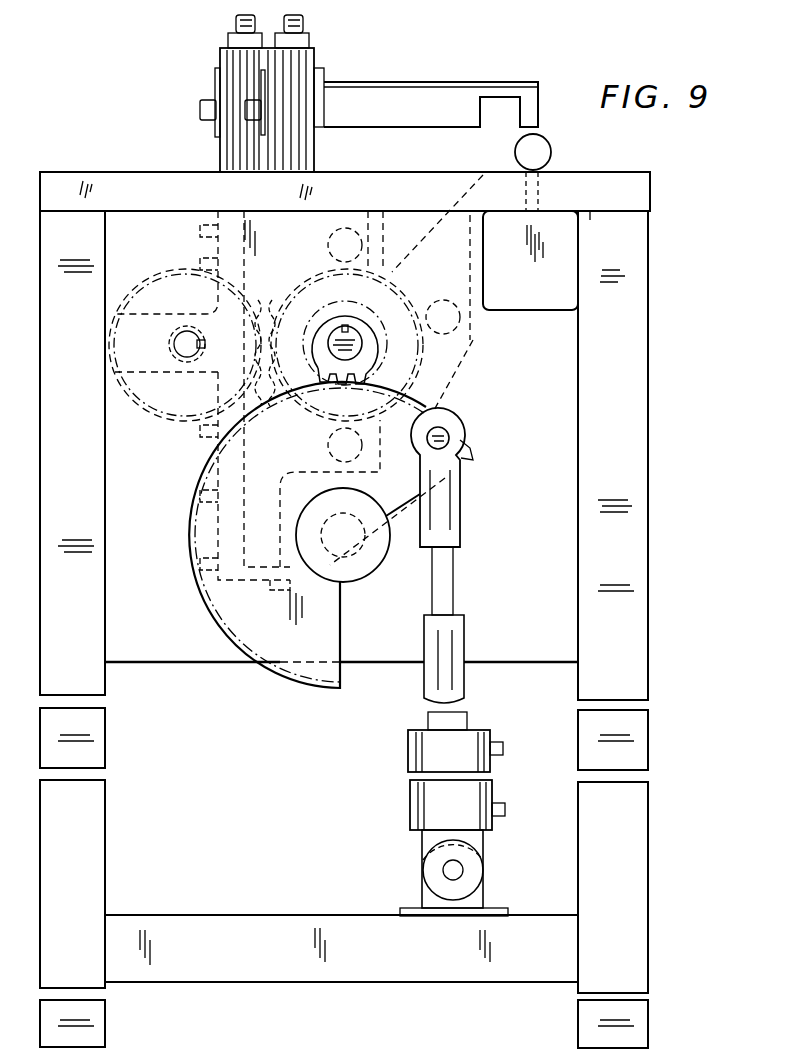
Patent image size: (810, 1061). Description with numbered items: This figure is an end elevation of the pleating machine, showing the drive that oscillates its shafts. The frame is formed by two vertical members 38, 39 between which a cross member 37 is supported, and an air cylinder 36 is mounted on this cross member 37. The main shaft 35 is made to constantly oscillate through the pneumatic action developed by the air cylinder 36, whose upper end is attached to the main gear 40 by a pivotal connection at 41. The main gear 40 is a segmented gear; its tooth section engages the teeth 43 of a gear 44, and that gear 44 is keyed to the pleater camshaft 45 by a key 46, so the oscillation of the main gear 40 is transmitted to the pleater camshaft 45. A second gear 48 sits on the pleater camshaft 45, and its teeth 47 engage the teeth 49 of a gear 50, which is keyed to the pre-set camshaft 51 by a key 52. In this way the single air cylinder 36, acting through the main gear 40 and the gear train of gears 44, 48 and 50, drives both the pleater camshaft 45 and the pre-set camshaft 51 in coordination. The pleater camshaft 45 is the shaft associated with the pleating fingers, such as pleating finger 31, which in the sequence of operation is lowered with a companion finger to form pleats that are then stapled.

The pleating finger 31 is at (540, 103).
The main shaft 35 is at (362, 548).
The air cylinder 36 is at (482, 735).
The cross member 37 is at (380, 970).
The vertical member 38 is at (88, 977).
The vertical member 39 is at (633, 970).
The main gear 40 is at (465, 462).
The pivotal connection 41 is at (446, 434).
The teeth 43 is at (345, 388).
The gear 44 is at (372, 349).
The pleater camshaft 45 is at (352, 343).
The key 46 is at (345, 325).
The teeth 47 is at (284, 353).
The gear 48 is at (322, 279).
The teeth 49 is at (258, 343).
The gear 50 is at (178, 283).
The pre-set camshaft 51 is at (180, 339).
The key 52 is at (205, 348).